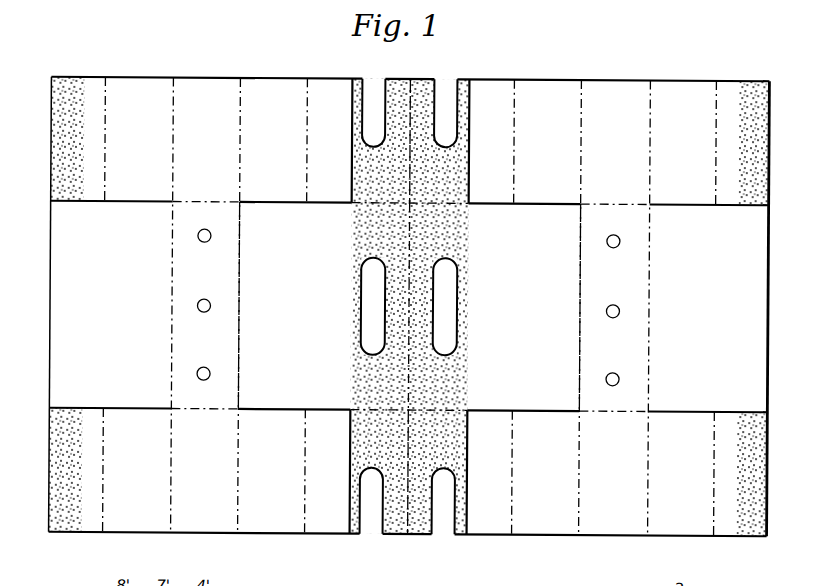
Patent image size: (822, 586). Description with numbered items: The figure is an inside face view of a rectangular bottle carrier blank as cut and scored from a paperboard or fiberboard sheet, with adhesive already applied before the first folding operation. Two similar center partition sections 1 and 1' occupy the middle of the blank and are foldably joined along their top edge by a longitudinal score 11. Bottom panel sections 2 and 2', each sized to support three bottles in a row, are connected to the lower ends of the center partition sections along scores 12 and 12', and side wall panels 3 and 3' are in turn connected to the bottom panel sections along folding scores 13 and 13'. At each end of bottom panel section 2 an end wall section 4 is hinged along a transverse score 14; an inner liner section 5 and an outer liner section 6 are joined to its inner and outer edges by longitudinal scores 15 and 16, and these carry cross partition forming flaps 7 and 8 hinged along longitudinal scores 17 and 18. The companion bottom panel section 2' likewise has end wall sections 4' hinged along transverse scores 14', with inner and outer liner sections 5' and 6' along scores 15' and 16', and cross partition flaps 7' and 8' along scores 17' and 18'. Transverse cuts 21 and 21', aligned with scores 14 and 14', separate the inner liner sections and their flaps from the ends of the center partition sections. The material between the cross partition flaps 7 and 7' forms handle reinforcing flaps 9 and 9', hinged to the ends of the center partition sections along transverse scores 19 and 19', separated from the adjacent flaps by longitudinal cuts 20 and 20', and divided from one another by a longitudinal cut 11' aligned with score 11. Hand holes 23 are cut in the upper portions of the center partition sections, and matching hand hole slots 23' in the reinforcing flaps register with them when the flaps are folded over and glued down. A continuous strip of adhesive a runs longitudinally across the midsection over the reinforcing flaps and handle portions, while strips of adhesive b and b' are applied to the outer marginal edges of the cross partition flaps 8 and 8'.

The center partition section 1 is at (548, 307).
The center partition section 1' is at (270, 305).
The bottom panel section 2 is at (613, 310).
The bottom panel section 2' is at (205, 304).
The side wall panel 3 is at (733, 308).
The side wall panel 3' is at (83, 304).
The end wall section 4 is at (598, 307).
The end wall section 4' is at (218, 305).
The inner liner section 5 is at (533, 307).
The inner liner section 5' is at (286, 305).
The outer liner section 6 is at (667, 308).
The outer liner section 6' is at (153, 304).
The cross partition forming flap 7 is at (481, 306).
The cross partition forming flap 7' is at (335, 305).
The cross partition forming flap 8 is at (724, 308).
The cross partition forming flap 8' is at (94, 304).
The handle reinforcing flap 9 is at (448, 306).
The handle reinforcing flap 9' is at (366, 306).
The longitudinal score 11 is at (456, 307).
The longitudinal cut 11' is at (422, 314).
The score 12 is at (557, 331).
The score 12' is at (259, 329).
The folding score 13 is at (668, 357).
The folding score 13' is at (153, 353).
The transverse score 14 is at (614, 308).
The transverse score 14' is at (205, 304).
The longitudinal score 15 is at (560, 348).
The longitudinal score 15' is at (259, 351).
The longitudinal score 16 is at (666, 354).
The longitudinal score 16' is at (153, 350).
The longitudinal score 17 is at (496, 352).
The longitudinal score 17' is at (323, 351).
The longitudinal score 18 is at (702, 317).
The longitudinal score 18' is at (117, 308).
The transverse score 19 is at (456, 307).
The transverse score 19' is at (363, 306).
The longitudinal cut 20 is at (483, 312).
The longitudinal cut 20' is at (338, 311).
The transverse cut 21 is at (524, 217).
The transverse cut 21' is at (295, 217).
The hand hole 23 is at (407, 306).
The hand hole slot 23' is at (418, 317).
The strip of adhesive a is at (438, 380).
The strip of adhesive b is at (767, 308).
The strip of adhesive b' is at (49, 304).